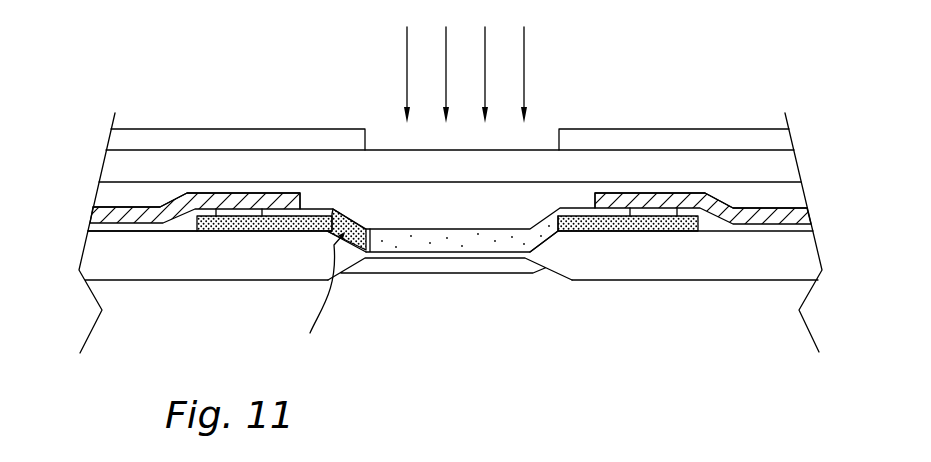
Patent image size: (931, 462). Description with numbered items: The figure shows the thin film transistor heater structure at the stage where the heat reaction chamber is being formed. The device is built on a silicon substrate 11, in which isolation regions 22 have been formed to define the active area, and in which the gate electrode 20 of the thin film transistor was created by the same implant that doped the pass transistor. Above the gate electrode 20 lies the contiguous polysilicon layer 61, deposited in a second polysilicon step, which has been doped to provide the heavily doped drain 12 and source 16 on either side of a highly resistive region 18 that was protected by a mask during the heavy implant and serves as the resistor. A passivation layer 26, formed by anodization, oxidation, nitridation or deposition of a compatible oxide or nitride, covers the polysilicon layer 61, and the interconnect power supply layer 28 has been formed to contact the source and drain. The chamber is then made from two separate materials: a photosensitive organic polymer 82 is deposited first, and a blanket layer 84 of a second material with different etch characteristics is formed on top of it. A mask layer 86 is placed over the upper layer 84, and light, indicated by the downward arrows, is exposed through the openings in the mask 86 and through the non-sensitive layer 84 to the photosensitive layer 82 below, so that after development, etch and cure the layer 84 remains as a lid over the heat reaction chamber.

The silicon substrate 11 is at (798, 330).
The drain 12 is at (613, 233).
The source 16 is at (230, 232).
The highly resistive region 18 is at (413, 250).
The gate electrode 20 is at (503, 267).
The isolation regions 22 is at (102, 255).
The passivation layer 26 is at (372, 253).
The power supply layer 28 is at (102, 212).
The polysilicon layer 61 is at (316, 293).
The photosensitive organic polymer 82 is at (795, 198).
The blanket layer 84 is at (783, 167).
The mask layer 86 is at (782, 137).